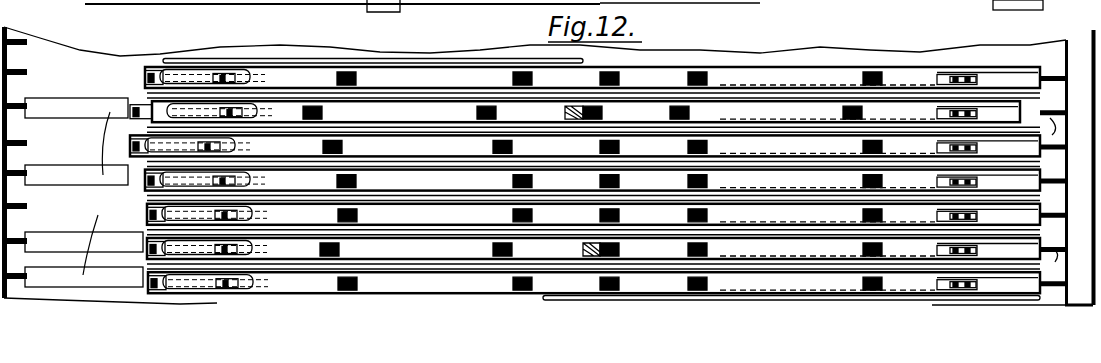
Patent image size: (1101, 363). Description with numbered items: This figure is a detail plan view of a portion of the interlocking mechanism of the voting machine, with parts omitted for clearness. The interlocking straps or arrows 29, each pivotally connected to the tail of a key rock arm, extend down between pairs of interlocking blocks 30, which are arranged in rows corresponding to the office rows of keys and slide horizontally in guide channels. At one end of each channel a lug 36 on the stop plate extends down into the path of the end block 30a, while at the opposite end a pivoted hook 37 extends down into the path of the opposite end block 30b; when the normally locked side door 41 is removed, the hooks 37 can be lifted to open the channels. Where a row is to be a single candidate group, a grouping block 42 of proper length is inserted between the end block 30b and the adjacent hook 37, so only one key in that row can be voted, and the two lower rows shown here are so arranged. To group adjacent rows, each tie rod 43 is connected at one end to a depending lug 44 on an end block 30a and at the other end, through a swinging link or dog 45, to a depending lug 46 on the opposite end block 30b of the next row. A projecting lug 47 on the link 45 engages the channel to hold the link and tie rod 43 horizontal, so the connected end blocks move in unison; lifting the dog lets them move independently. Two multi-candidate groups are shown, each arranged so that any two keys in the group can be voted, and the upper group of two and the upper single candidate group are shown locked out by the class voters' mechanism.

The interlocking strap or arrow 29 is at (340, 137).
The interlocking block 30 is at (745, 82).
The end block 30a is at (1000, 150).
The opposite end block 30b is at (295, 303).
The lug 36 is at (1056, 124).
The hook 37 is at (25, 98).
The side door 41 is at (8, 127).
The grouping block 42 is at (94, 193).
The tie rod 43 is at (520, 135).
The depending lug 44 is at (958, 148).
The swinging link or dog 45 is at (208, 220).
The depending lug 46 is at (200, 135).
The projecting lug 47 is at (150, 110).